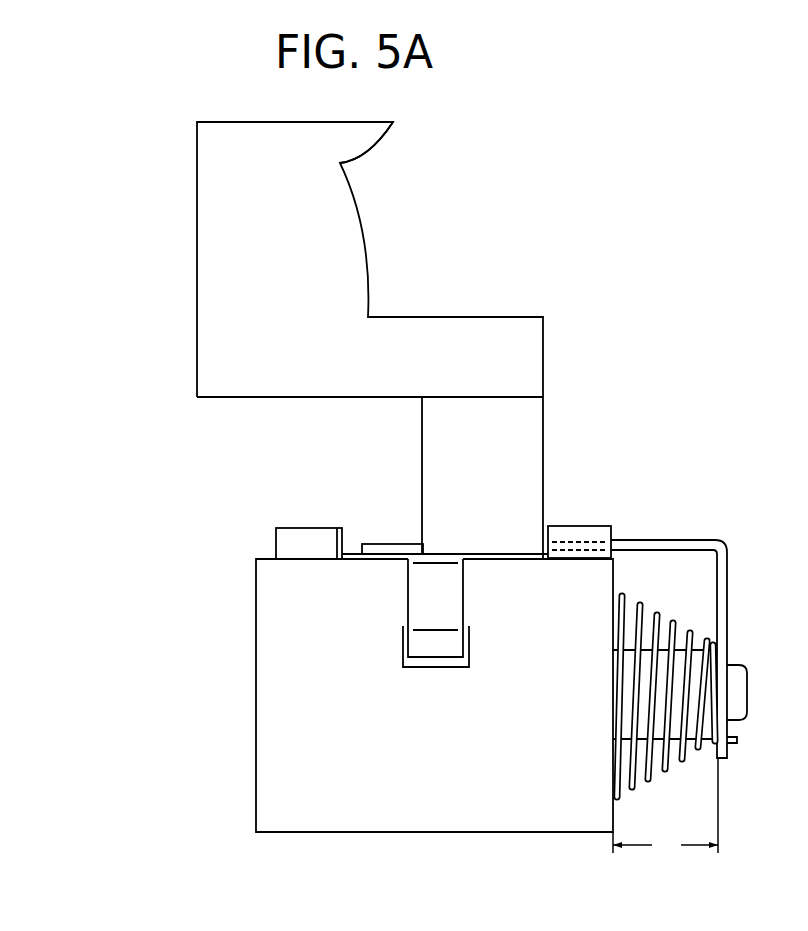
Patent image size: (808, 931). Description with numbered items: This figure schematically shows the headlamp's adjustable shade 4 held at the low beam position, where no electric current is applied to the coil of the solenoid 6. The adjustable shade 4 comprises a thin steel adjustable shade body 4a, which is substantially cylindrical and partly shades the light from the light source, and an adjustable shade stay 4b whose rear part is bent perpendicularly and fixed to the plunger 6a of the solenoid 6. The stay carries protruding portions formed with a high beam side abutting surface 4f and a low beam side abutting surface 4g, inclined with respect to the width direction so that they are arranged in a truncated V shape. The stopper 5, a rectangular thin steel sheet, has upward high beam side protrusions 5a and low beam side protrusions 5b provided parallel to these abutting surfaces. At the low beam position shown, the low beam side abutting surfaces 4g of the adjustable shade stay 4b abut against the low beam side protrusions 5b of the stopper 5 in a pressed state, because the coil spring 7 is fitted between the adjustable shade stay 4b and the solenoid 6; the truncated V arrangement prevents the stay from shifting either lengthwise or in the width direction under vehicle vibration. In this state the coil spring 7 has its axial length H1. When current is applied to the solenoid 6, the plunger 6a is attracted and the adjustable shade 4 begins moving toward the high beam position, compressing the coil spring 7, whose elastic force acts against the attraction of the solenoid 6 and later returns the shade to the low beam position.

The adjustable shade 4 is at (462, 440).
The adjustable shade body 4a is at (323, 193).
The adjustable shade stay 4b is at (660, 540).
The high beam side abutting surface 4f is at (387, 543).
The low beam side abutting surface 4g is at (563, 542).
The stopper 5 is at (415, 500).
The high beam side protrusion 5a is at (285, 541).
The low beam side protrusion 5b is at (590, 525).
The solenoid 6 is at (480, 695).
The plunger 6a is at (700, 658).
The coil spring 7 is at (667, 608).
The axial length of the coil spring H1 is at (665, 808).